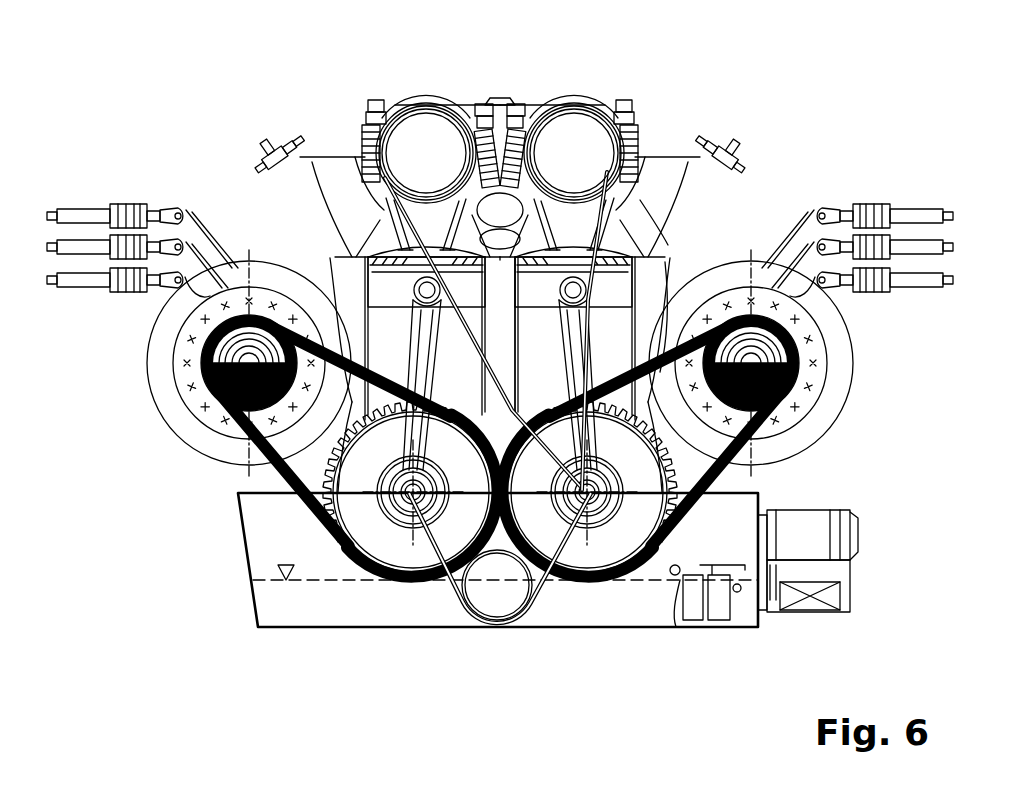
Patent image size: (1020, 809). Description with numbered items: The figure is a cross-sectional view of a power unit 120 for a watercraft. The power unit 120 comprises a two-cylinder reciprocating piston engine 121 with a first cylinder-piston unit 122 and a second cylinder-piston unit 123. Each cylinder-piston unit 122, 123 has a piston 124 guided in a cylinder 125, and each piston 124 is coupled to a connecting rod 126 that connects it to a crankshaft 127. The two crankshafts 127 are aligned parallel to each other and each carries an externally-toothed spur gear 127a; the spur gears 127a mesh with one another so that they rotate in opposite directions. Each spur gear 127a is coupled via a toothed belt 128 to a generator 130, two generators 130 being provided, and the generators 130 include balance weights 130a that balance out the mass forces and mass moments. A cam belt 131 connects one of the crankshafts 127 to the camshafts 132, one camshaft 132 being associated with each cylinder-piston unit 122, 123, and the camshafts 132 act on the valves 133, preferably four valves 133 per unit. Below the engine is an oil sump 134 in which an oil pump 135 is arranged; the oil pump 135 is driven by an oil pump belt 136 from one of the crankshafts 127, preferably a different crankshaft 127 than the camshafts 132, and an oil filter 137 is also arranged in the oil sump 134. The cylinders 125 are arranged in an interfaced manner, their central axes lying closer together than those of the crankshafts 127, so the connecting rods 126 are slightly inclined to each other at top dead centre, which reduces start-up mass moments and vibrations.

The power unit 120 is at (795, 148).
The two-cylinder reciprocating piston engine 121 is at (350, 235).
The first cylinder-piston unit 122 is at (338, 266).
The second cylinder-piston unit 123 is at (672, 280).
The piston 124 is at (655, 245).
The cylinder 125 is at (518, 342).
The connecting rod 126 is at (422, 368).
The crankshaft 127 is at (400, 493).
The spur gear 127a is at (377, 545).
The toothed belt 128 is at (262, 482).
The generator 130 is at (152, 384).
The balance weight 130a is at (208, 398).
The cam belt 131 is at (498, 105).
The camshaft 132 is at (426, 110).
The valve 133 is at (362, 110).
The oil sump 134 is at (275, 612).
The oil pump 135 is at (492, 608).
The oil pump belt 136 is at (445, 594).
The oil filter 137 is at (833, 614).